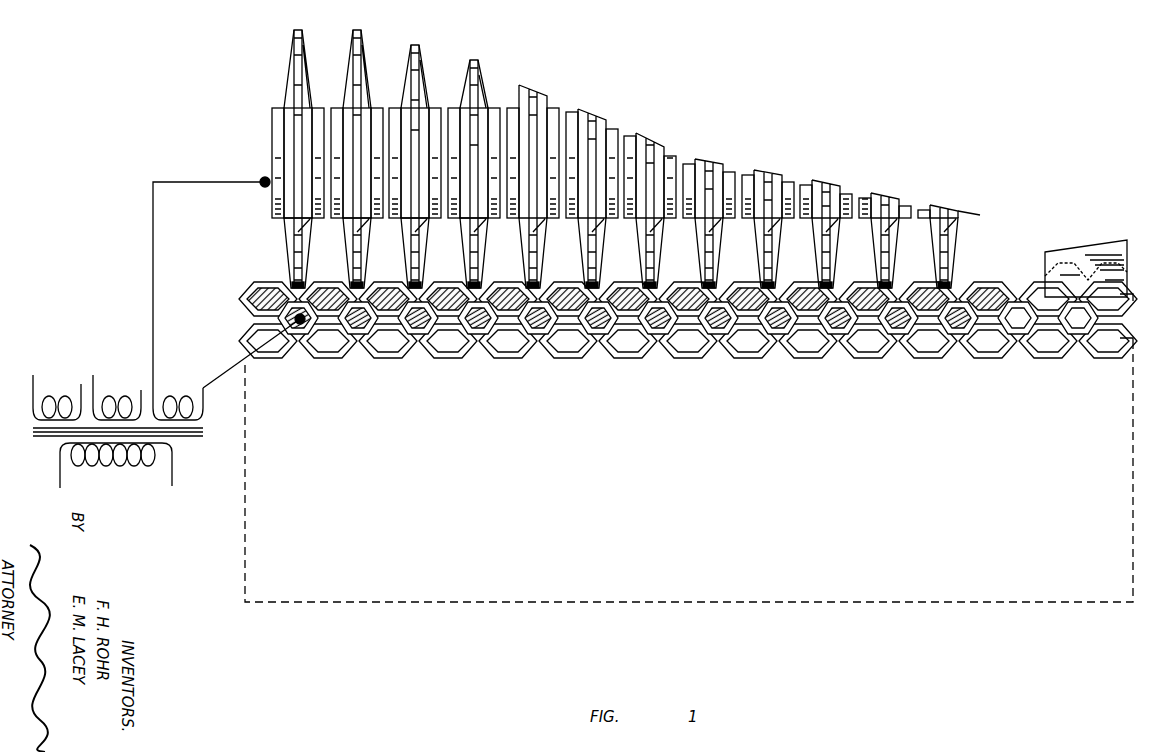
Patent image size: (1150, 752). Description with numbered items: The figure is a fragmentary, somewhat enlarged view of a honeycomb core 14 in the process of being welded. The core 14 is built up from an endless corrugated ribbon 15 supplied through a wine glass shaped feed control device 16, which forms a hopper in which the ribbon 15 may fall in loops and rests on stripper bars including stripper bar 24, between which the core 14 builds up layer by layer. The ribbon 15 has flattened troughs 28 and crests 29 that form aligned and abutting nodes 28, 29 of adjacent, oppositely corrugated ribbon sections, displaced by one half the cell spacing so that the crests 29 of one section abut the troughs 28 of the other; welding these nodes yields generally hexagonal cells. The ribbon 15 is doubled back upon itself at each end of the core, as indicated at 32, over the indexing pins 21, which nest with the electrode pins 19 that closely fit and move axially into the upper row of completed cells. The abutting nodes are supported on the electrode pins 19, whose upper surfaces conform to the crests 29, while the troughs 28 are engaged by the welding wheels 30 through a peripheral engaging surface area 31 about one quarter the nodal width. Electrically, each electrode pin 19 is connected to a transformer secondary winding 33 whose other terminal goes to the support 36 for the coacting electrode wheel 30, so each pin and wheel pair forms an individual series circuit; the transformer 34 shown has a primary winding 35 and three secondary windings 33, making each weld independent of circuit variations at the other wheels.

The core 14 is at (971, 606).
The corrugated ribbon 15 is at (1028, 290).
The feed control device 16 is at (1087, 248).
The electrode pins 19 is at (302, 331).
The indexing pins 21 is at (272, 286).
The stripper bar 24 is at (1078, 318).
The troughs 28 is at (1016, 297).
The crests 29 is at (990, 287).
The welding wheels 30 is at (298, 92).
The engaging surface area 31 is at (475, 86).
The doubled back ribbon ends 32 is at (245, 299).
The secondary winding 33 is at (82, 392).
The transformer 34 is at (182, 452).
The primary winding 35 is at (60, 483).
The support 36 is at (281, 127).